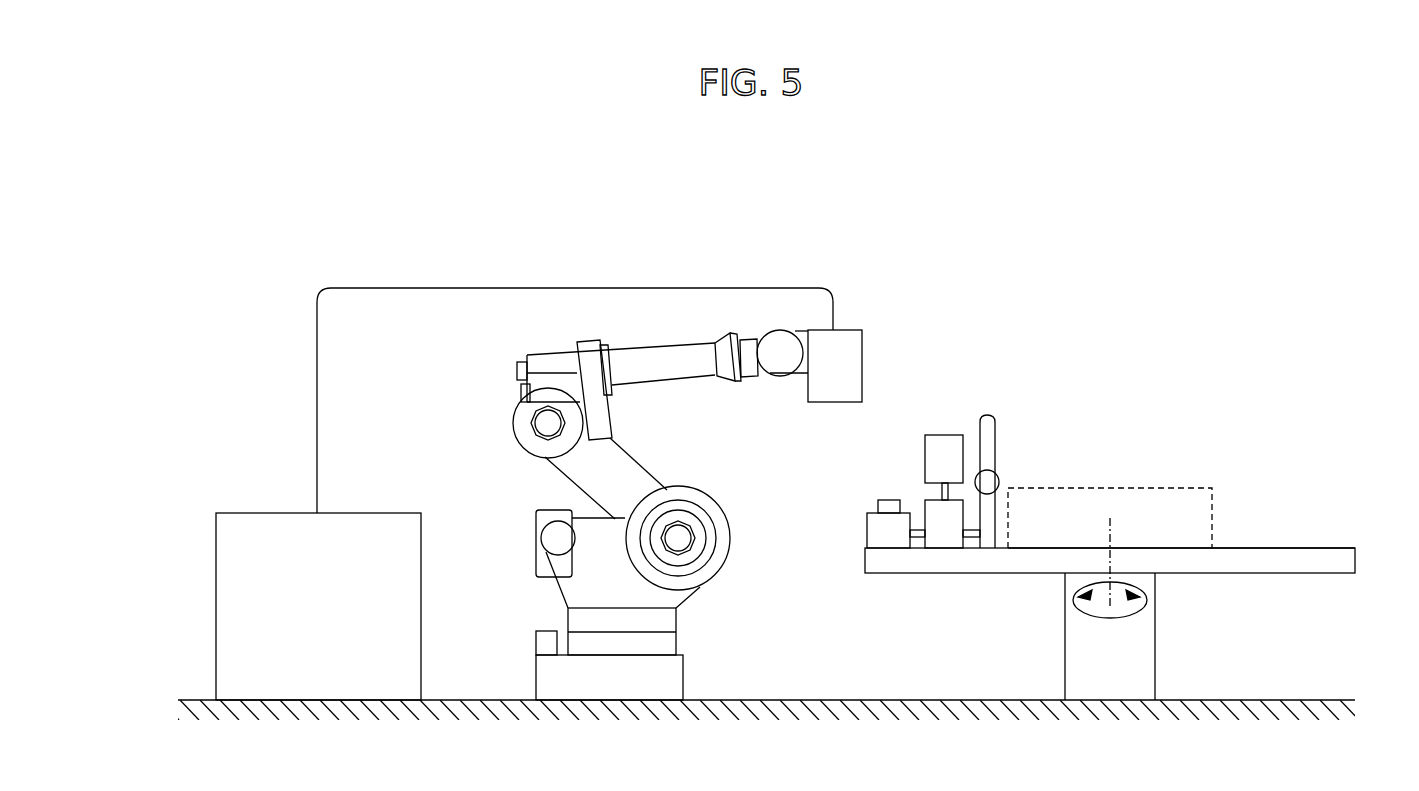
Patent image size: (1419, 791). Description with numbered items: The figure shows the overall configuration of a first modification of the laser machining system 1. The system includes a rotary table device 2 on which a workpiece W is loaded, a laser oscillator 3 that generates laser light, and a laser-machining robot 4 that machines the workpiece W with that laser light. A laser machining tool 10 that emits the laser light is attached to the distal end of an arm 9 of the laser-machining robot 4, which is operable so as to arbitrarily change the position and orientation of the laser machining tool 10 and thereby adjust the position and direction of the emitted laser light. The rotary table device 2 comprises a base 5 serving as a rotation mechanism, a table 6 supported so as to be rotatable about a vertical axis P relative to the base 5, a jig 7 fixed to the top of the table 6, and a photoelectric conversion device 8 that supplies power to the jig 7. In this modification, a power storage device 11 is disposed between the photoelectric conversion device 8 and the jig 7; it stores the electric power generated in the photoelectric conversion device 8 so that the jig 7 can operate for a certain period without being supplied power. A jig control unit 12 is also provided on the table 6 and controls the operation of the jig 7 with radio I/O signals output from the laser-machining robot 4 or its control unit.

The laser machining system 1 is at (1103, 215).
The rotary table device 2 is at (1292, 535).
The laser oscillator 3 is at (262, 513).
The laser-machining robot 4 is at (685, 515).
The base 5 is at (1155, 668).
The table 6 is at (1240, 548).
The jig 7 is at (997, 432).
The photoelectric conversion device 8 is at (867, 535).
The arm 9 is at (676, 382).
The laser machining tool 10 is at (862, 357).
The power storage device 11 is at (925, 548).
The jig control unit 12 is at (925, 457).
The workpiece W is at (1115, 488).
The vertical axis P is at (1140, 585).